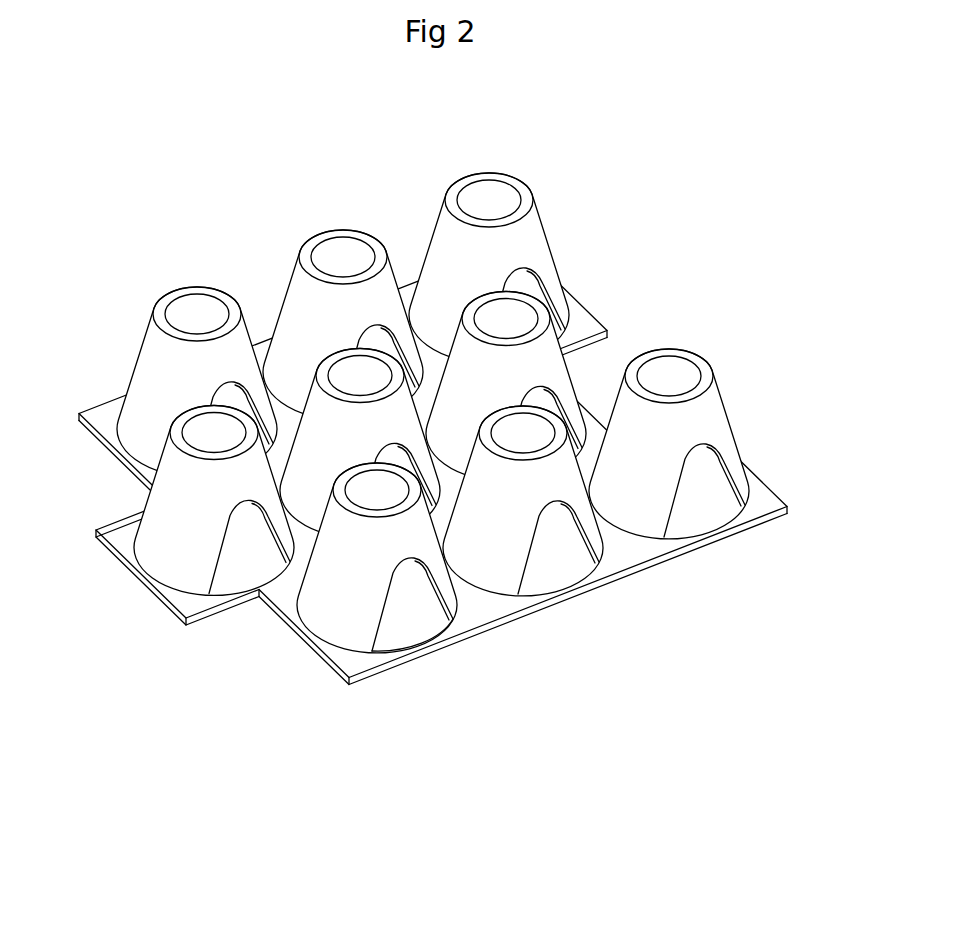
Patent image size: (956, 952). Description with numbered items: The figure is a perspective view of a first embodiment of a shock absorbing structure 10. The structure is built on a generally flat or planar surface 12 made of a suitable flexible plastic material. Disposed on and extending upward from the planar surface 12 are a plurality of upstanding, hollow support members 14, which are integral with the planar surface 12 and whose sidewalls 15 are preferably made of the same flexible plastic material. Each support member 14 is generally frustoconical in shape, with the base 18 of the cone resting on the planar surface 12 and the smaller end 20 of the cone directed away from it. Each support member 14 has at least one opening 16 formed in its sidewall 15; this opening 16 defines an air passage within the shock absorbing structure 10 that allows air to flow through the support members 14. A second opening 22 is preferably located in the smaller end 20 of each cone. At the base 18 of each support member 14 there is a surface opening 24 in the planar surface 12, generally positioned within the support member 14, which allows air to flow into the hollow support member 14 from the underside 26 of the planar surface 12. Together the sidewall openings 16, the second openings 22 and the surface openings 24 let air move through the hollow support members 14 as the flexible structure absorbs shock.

The shock absorbing structure 10 is at (180, 200).
The planar surface 12 is at (482, 525).
The support member 14 is at (452, 531).
The sidewall 15 is at (707, 408).
The opening 16 is at (397, 612).
The base 18 is at (757, 484).
The smaller end 20 is at (700, 357).
The second opening 22 is at (655, 373).
The surface opening 24 is at (426, 628).
The underside 26 is at (663, 562).